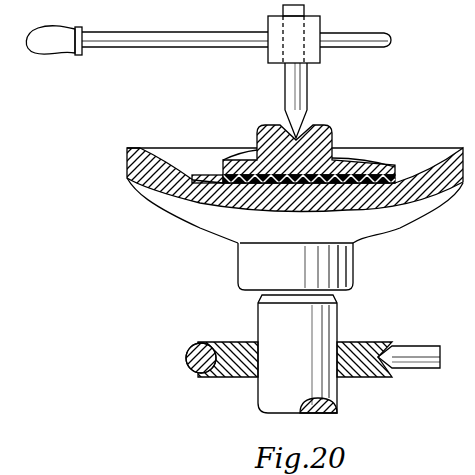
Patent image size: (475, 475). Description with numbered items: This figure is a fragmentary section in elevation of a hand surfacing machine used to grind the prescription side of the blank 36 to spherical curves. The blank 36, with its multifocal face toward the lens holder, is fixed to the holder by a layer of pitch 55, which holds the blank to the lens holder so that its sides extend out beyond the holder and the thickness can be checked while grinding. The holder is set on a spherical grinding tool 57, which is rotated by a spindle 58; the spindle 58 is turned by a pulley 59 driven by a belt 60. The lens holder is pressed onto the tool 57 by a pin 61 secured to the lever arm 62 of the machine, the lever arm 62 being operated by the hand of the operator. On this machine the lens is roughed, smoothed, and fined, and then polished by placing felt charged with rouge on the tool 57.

The lever arm 62 is at (356, 34).
The pin 61 is at (301, 85).
The layer of pitch 55 is at (368, 172).
The blank 36 is at (196, 175).
The spherical grinding tool 57 is at (408, 218).
The pulley 59 is at (345, 340).
The spindle 58 is at (340, 388).
The belt 60 is at (408, 346).